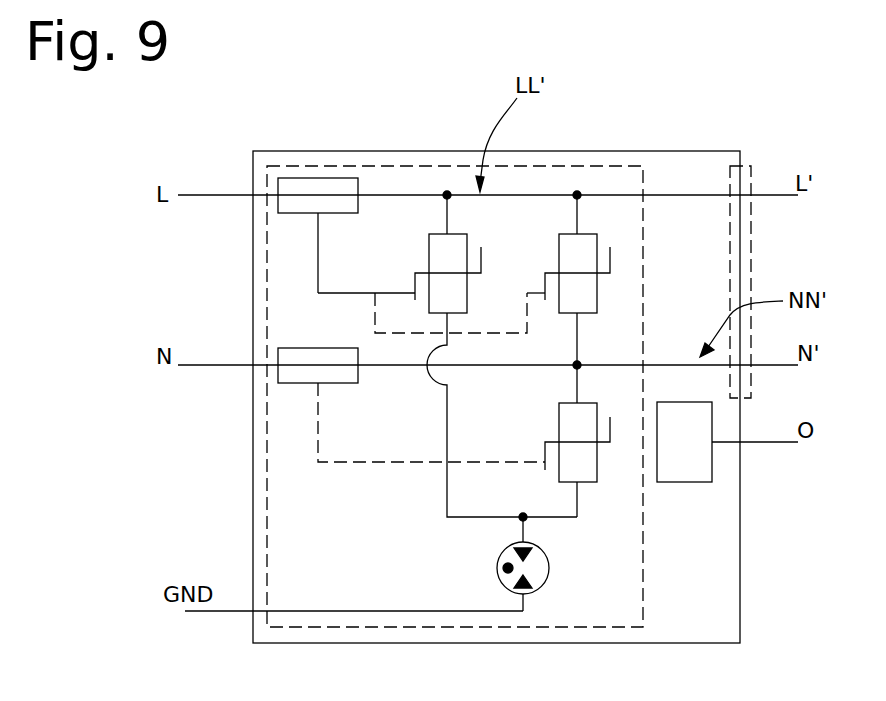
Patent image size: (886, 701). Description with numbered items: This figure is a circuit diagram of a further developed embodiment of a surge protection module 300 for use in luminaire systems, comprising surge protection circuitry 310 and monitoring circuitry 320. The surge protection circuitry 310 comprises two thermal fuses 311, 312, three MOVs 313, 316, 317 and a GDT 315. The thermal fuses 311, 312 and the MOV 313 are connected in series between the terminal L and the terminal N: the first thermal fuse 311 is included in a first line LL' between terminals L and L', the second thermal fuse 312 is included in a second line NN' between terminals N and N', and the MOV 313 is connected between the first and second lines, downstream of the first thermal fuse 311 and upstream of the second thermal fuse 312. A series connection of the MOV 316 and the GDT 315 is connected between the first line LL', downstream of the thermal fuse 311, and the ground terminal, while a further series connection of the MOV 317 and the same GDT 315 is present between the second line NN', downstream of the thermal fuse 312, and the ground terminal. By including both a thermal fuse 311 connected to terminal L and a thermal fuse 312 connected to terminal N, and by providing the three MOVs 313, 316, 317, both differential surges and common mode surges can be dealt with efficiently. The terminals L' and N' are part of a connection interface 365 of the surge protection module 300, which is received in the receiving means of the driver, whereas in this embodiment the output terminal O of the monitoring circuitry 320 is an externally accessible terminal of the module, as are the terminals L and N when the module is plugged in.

The surge protection module 300 is at (612, 151).
The surge protection circuitry 310 is at (530, 627).
The first thermal fuse 311 is at (294, 190).
The second thermal fuse 312 is at (333, 375).
The MOV 313 is at (582, 243).
The GDT 315 is at (537, 576).
The MOV 316 is at (452, 243).
The MOV 317 is at (570, 417).
The monitoring circuitry 320 is at (727, 442).
The connection interface 365 is at (751, 247).